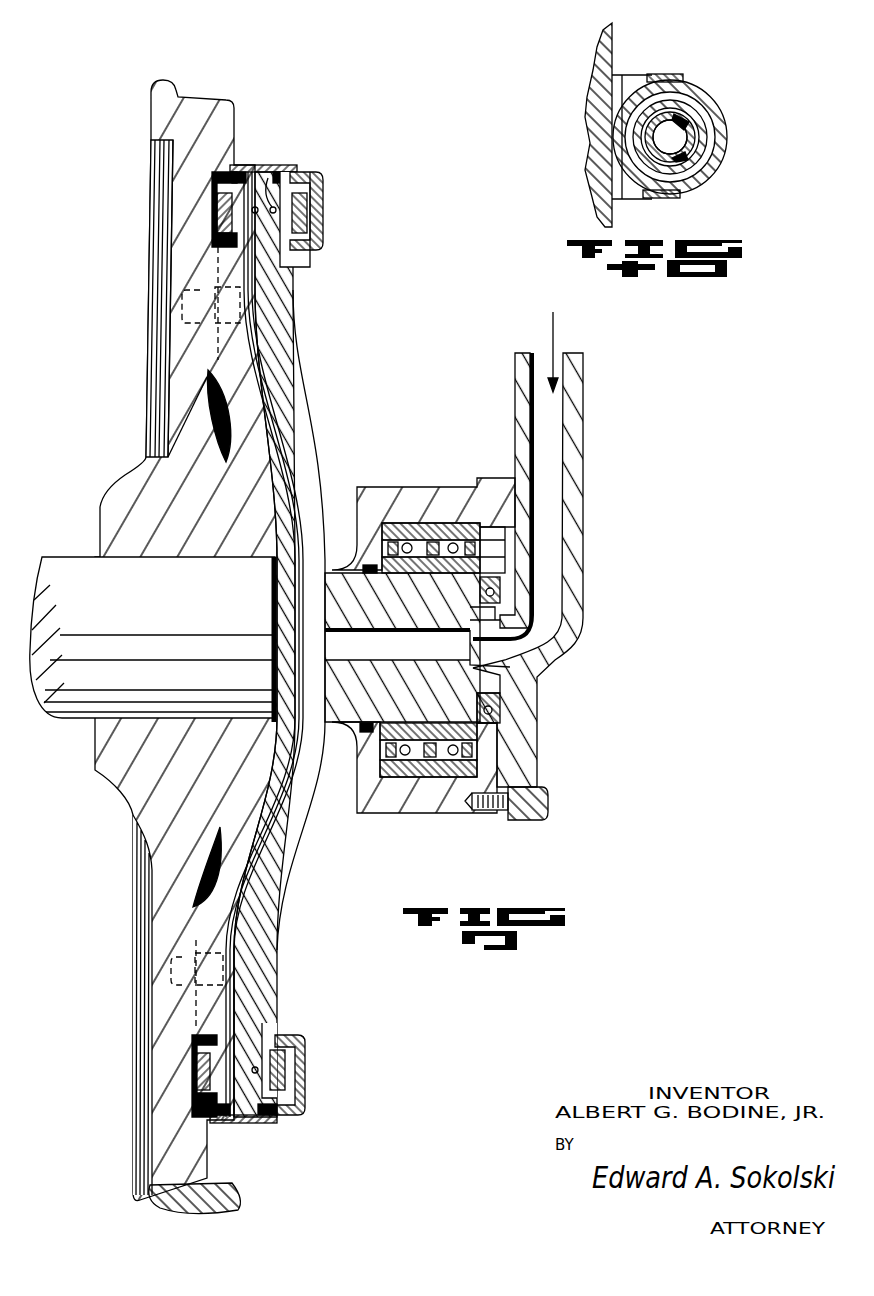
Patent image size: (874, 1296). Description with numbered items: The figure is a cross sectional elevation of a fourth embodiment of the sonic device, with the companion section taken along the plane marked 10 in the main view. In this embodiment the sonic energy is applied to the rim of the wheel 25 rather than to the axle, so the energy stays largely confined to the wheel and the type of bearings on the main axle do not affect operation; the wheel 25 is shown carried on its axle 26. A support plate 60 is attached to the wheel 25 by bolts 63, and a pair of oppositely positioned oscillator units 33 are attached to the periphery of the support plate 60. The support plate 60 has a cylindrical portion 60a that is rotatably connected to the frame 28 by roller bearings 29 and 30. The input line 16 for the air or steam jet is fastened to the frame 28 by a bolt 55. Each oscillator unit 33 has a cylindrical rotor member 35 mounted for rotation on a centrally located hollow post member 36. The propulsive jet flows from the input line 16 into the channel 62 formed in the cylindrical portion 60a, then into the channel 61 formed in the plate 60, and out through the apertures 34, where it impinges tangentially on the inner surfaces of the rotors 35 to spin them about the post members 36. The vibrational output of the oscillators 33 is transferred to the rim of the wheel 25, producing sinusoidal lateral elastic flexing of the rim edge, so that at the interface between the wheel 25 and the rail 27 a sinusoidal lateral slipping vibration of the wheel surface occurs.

In FIG. 9, the section plane indicator 10 is at (207, 207).
In FIG. 9, the input line 16 is at (577, 505).
In FIG. 9, the wheel 25 is at (197, 1172).
In FIG. 9, the shaft 26 is at (152, 639).
In FIG. 9, the rail 27 is at (238, 1195).
In FIG. 9, the frame 28 is at (372, 482).
In FIG. 9, the roller bearings 29 is at (442, 526).
In FIG. 9, the roller bearing 30 is at (500, 600).
In FIG. 9, the oscillator units 33 is at (332, 253).
In FIG. 9, the apertures 34 is at (263, 170).
In FIG. 10, the apertures 34 is at (637, 77).
In FIG. 9, the cylindrical rotor members 35 is at (300, 212).
In FIG. 10, the cylindrical rotor members 35 is at (707, 132).
In FIG. 9, the hollow post member 36 is at (296, 185).
In FIG. 10, the hollow post member 36 is at (680, 117).
In FIG. 9, the bolt 55 is at (548, 800).
In FIG. 9, the support plate 60 is at (300, 368).
In FIG. 9, the cylindrical portion 60a is at (418, 615).
In FIG. 9, the channel 61 is at (285, 412).
In FIG. 10, the channel 61 is at (666, 145).
In FIG. 9, the channel 62 is at (417, 647).
In FIG. 9, the bolts 63 is at (210, 325).